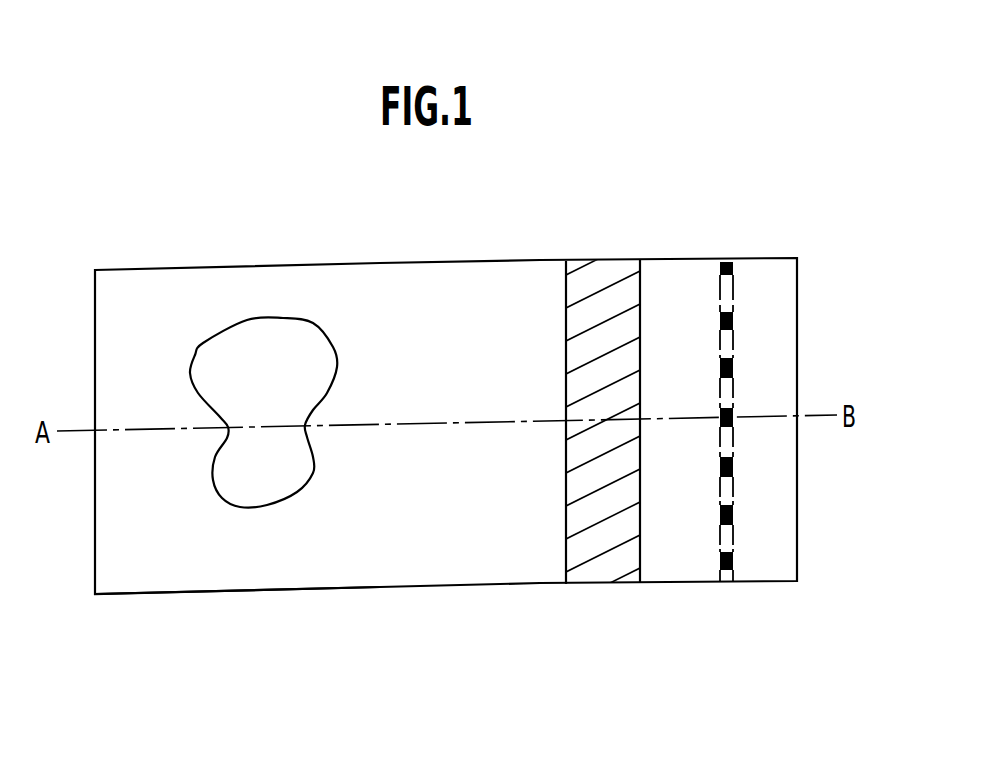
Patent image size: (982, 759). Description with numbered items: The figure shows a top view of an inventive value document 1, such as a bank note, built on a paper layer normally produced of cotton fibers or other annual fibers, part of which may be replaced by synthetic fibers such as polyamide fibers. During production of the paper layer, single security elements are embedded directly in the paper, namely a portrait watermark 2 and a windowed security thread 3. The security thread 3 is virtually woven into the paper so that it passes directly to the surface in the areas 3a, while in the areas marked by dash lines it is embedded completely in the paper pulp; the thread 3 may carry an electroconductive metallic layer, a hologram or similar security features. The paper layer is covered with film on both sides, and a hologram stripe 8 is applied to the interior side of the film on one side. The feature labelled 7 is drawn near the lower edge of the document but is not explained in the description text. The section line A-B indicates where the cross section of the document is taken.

The value document 1 is at (817, 265).
The portrait watermark 2 is at (272, 340).
The windowed security thread 3 is at (770, 382).
The areas where the thread passes to the surface 3a is at (733, 462).
The lower edge of card 7 is at (135, 565).
The hologram stripe 8 is at (607, 563).